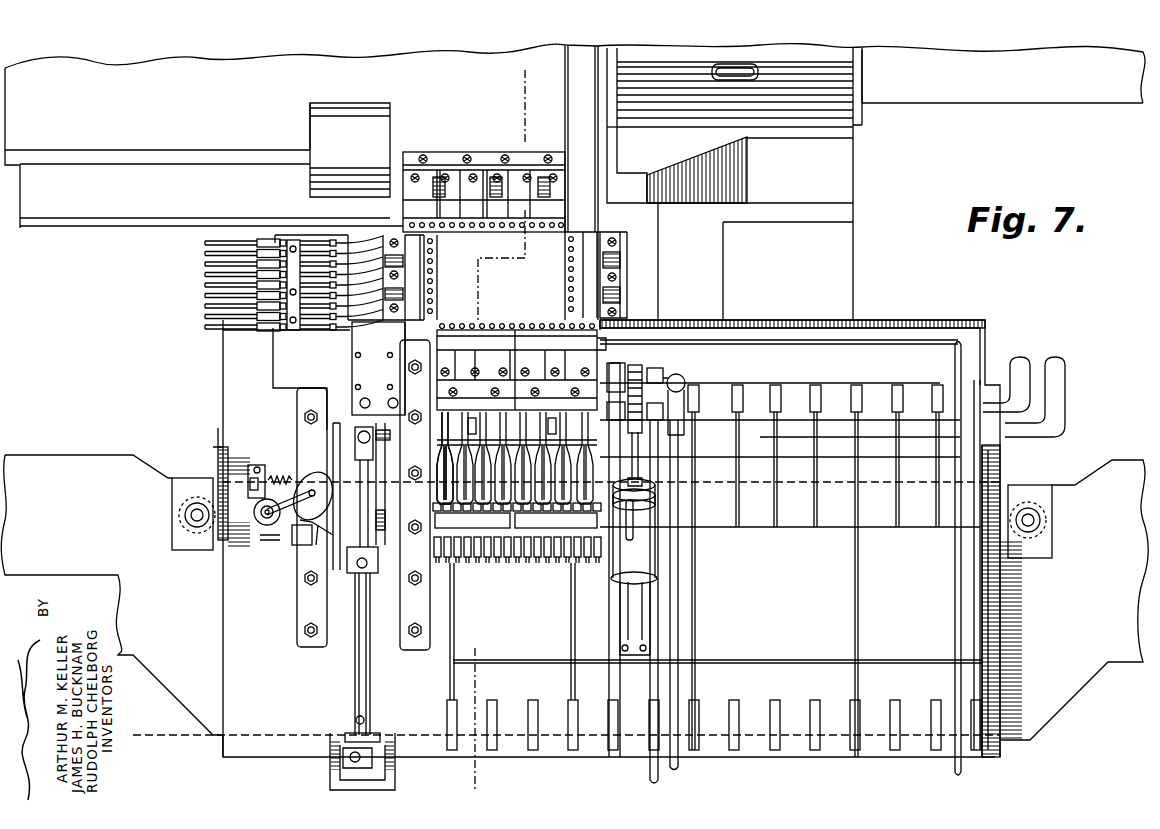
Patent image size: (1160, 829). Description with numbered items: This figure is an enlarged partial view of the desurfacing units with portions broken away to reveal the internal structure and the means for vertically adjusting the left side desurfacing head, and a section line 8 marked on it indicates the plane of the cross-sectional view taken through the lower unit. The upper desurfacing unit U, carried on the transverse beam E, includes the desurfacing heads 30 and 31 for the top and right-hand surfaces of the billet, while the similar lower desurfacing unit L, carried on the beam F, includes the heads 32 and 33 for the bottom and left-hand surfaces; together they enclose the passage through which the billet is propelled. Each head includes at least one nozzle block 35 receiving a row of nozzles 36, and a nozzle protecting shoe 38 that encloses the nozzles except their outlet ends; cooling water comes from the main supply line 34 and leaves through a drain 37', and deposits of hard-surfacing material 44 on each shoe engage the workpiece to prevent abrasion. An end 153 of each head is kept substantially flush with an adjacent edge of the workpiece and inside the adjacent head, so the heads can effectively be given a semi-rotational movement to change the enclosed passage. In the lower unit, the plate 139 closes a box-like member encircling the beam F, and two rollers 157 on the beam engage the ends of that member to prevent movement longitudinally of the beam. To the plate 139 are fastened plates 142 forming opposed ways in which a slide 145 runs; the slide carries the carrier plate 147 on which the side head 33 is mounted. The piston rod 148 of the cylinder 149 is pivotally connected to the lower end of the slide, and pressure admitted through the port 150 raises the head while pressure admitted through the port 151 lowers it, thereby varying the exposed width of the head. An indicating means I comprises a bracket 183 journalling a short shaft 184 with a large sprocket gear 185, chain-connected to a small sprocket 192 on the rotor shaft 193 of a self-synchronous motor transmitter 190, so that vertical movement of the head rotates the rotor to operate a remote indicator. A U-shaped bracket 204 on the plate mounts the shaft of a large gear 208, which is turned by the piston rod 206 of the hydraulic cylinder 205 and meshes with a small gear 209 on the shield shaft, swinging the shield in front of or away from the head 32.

The section line 8- 8 is at (545, 83).
The desurfacing head 30 is at (448, 192).
The desurfacing head 31 is at (590, 270).
The desurfacing head 32 is at (443, 340).
The desurfacing head 33 is at (436, 288).
The main supply line 34 is at (1020, 360).
The nozzle block 35 is at (483, 158).
The nozzles 36 is at (432, 276).
The drain 37' is at (1054, 397).
The nozzle protecting shoe 38 is at (428, 210).
The hard-surfacing deposits 44 is at (436, 262).
The plate 139 is at (243, 645).
The plate 142 is at (413, 605).
The slide 145 is at (385, 443).
The carrier plate 147 is at (292, 366).
The piston rod 148 is at (387, 507).
The cylinder 149 is at (355, 679).
The port 150 is at (363, 718).
The port 151 is at (362, 571).
The end of head 153 is at (560, 210).
The rollers 157 is at (176, 513).
The bracket 183 is at (313, 523).
The short shaft 184 is at (311, 489).
The sprocket gear 185 is at (322, 493).
The self-synchronous motor transmitter 190 is at (262, 520).
The sprocket 192 is at (280, 512).
The rotor shaft 193 is at (258, 514).
The U-shaped bracket 204 is at (663, 372).
The hydraulic cylinder 205 is at (627, 550).
The piston rod 206 is at (638, 462).
The large gear 208 is at (643, 405).
The small gear 209 is at (633, 372).
The transverse beam E is at (1008, 92).
The transverse beam F is at (60, 468).
The indicating means I is at (263, 538).
The lower desurfacing unit L is at (218, 418).
The upper desurfacing unit U is at (912, 105).